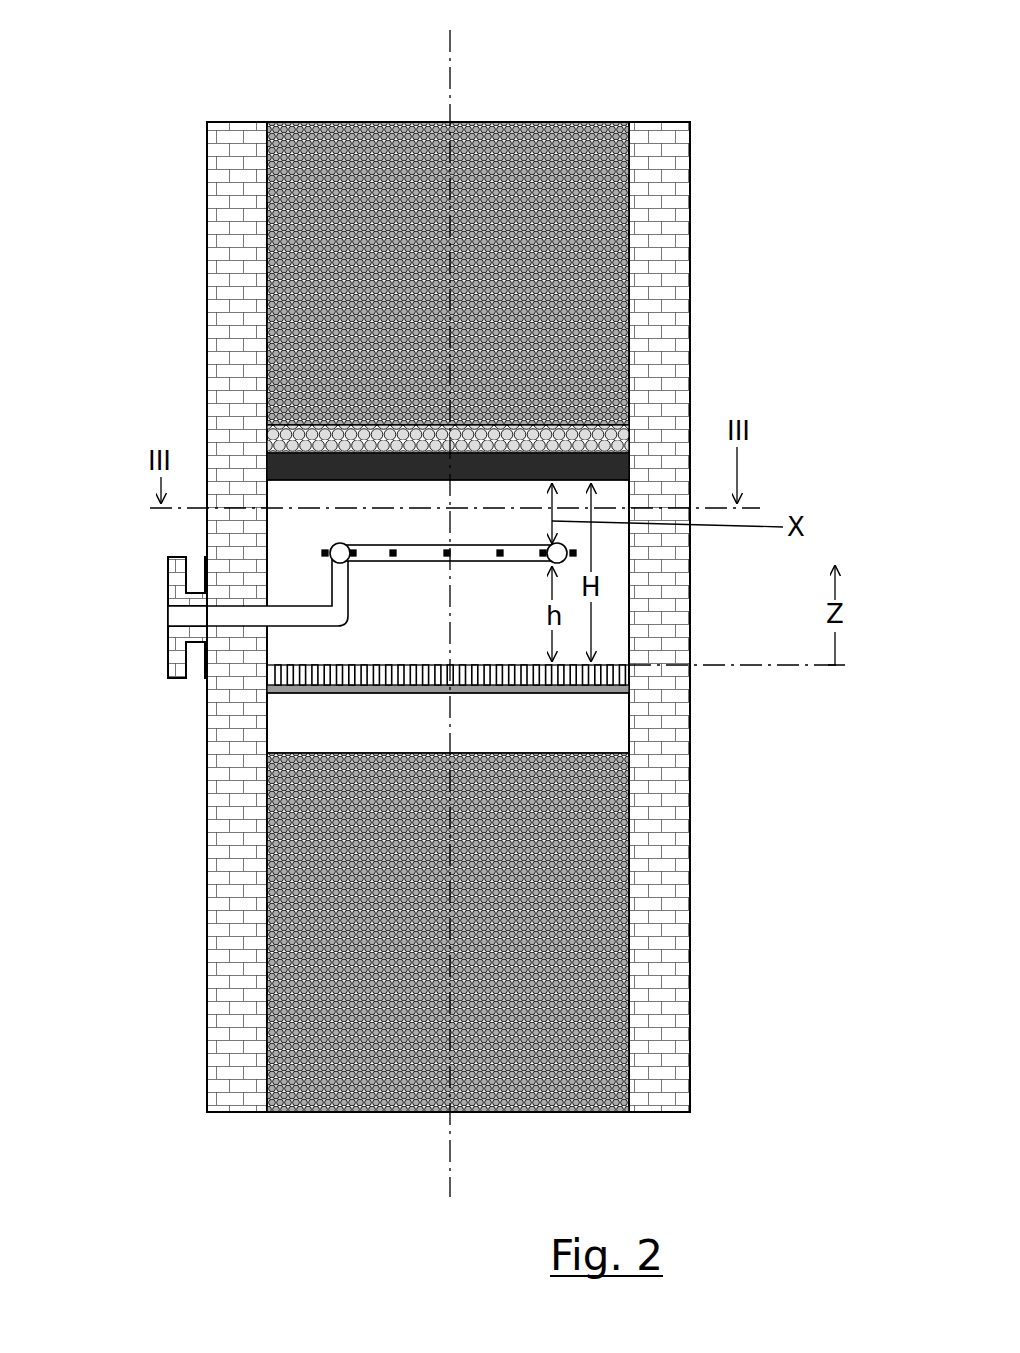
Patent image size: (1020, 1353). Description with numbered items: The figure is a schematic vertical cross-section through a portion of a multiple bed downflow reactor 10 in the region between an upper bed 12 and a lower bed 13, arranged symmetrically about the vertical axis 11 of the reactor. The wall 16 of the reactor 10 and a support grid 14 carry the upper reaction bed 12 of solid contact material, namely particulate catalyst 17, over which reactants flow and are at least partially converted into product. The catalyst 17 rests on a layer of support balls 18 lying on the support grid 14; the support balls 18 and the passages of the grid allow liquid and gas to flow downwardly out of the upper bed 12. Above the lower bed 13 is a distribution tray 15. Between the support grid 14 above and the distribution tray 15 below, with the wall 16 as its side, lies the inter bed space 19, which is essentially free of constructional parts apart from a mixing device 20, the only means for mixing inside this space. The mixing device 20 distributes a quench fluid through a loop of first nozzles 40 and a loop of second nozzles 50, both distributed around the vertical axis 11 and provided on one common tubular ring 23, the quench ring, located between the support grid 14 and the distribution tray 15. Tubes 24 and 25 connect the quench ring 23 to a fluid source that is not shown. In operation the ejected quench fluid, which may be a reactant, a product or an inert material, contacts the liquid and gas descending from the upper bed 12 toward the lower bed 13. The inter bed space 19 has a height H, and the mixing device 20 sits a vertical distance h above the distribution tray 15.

The multiple bed downflow reactor 10 is at (150, 98).
The vertical axis 11 is at (453, 62).
The upper bed 12 is at (570, 160).
The lower bed 13 is at (588, 832).
The support grid 14 is at (275, 463).
The distribution tray 15 is at (600, 689).
The wall 16 is at (661, 278).
The catalyst 17 is at (318, 145).
The support balls 18 is at (606, 440).
The inter bed space 19 is at (305, 648).
The mixing device 20 is at (318, 534).
The tubular ring 23 is at (467, 555).
The tube 24 is at (332, 578).
The tube 25 is at (193, 617).
The first nozzles 40 is at (393, 560).
The second nozzles 50 is at (322, 552).